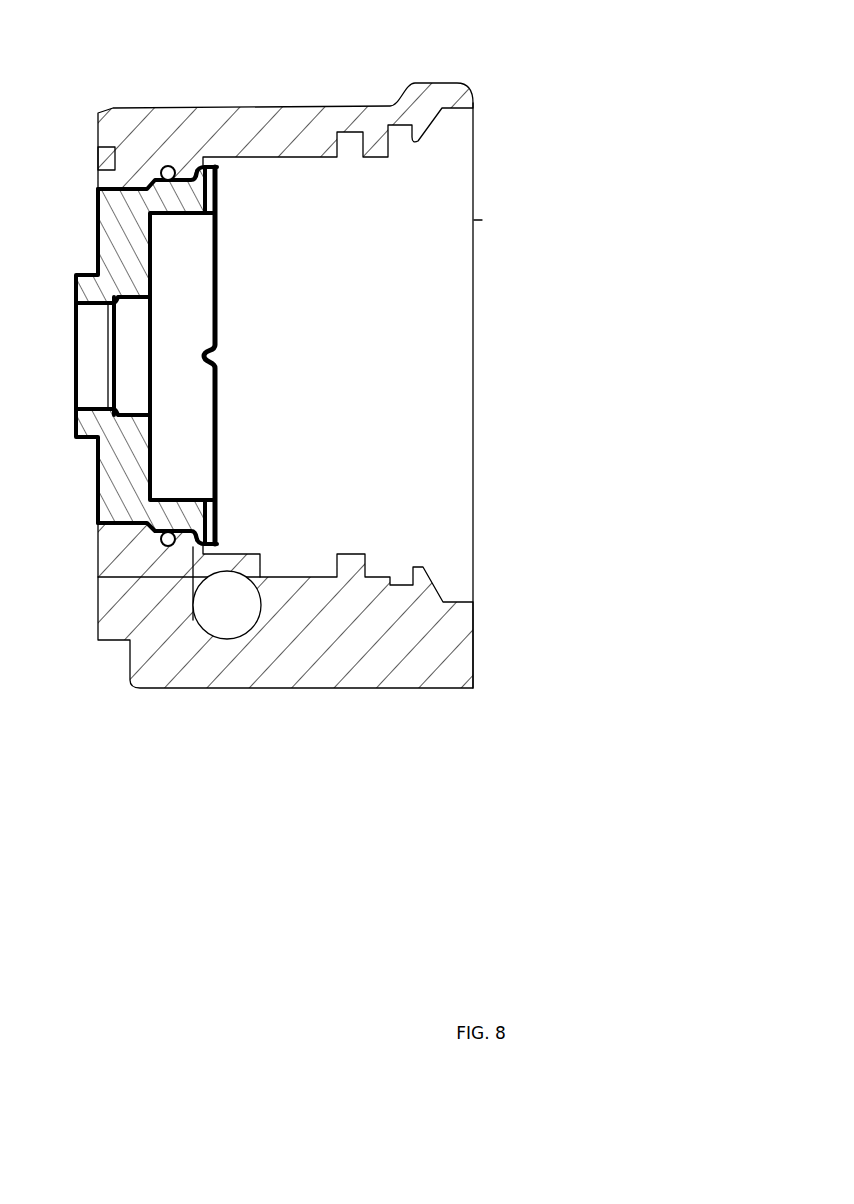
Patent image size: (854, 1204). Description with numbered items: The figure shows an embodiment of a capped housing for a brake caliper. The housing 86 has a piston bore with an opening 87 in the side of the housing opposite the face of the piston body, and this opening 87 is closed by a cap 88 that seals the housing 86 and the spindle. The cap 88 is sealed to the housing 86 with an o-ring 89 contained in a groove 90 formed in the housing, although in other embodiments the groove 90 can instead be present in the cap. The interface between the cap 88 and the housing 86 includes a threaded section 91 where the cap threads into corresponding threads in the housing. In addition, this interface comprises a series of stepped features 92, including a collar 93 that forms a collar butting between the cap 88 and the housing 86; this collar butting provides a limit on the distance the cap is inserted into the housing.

The housing 86 is at (275, 122).
The opening 87 is at (79, 188).
The cap 88 is at (130, 497).
The o-ring 89 is at (174, 163).
The groove 90 is at (150, 532).
The threaded section 91 is at (98, 531).
The stepped features 92 is at (194, 534).
The collar 93 is at (200, 158).